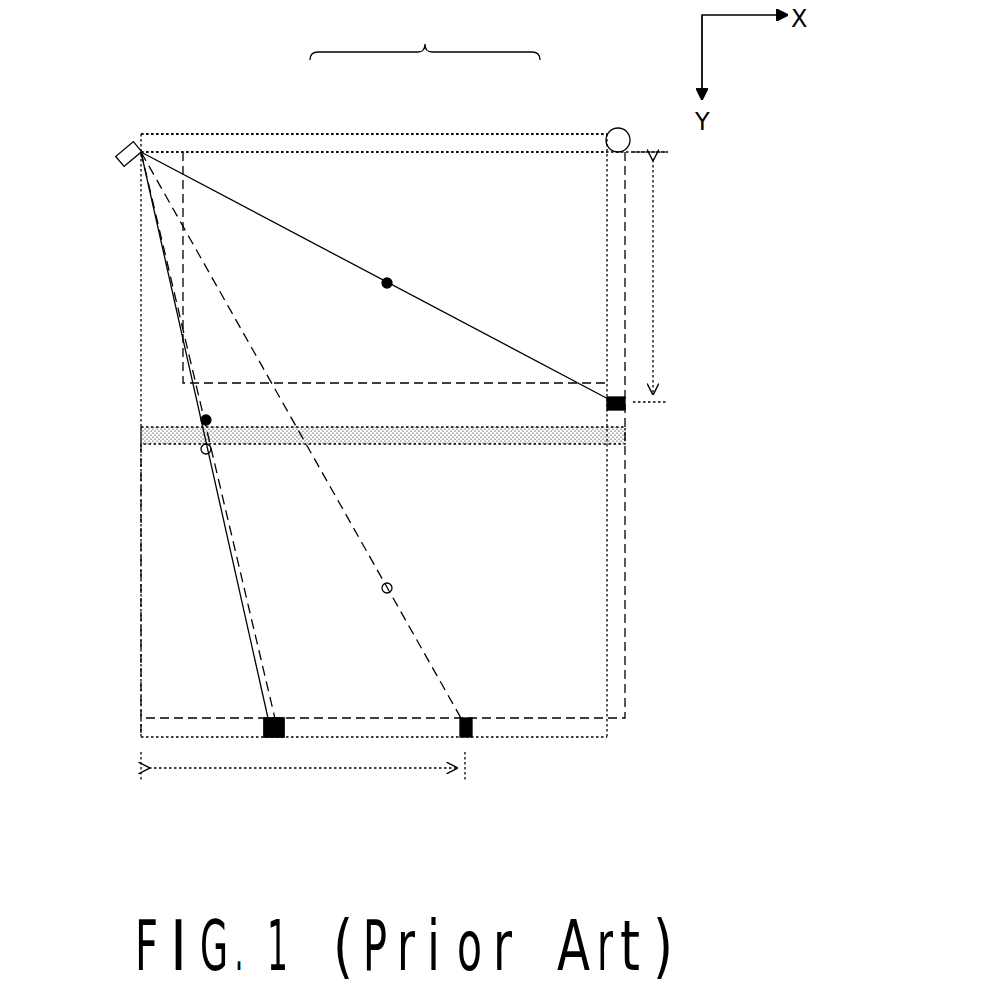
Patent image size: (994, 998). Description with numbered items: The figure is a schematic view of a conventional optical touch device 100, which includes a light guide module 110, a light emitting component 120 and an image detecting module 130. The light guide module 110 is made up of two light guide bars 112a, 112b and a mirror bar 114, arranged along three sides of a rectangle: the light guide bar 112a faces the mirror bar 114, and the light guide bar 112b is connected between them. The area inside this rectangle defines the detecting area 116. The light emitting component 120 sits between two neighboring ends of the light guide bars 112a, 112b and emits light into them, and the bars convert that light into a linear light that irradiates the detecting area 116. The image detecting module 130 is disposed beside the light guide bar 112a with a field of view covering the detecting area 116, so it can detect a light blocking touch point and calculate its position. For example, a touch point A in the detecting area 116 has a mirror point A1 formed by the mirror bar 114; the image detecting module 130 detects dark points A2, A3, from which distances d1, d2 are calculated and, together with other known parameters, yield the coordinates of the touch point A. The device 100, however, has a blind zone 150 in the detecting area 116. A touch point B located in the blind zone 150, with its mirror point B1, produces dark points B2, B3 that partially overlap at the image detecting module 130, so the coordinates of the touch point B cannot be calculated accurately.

The optical touch device 100 is at (700, 787).
The light guide module 110 is at (404, 374).
The light guide bar 112a is at (350, 133).
The light guide bar 112b is at (612, 210).
The mirror bar 114 is at (468, 440).
The detecting area 116 is at (252, 182).
The light emitting component 120 is at (622, 128).
The image detecting module 130 is at (118, 146).
The blind zone 150 is at (170, 398).
The touch point A is at (395, 281).
The mirror point A1 is at (392, 580).
The dark point A2 is at (626, 404).
The dark point A3 is at (473, 730).
The touch point B is at (212, 418).
The mirror point B1 is at (203, 455).
The dark point B2 is at (285, 733).
The dark point B3 is at (263, 734).
The distance d1 is at (656, 286).
The distance d2 is at (305, 770).